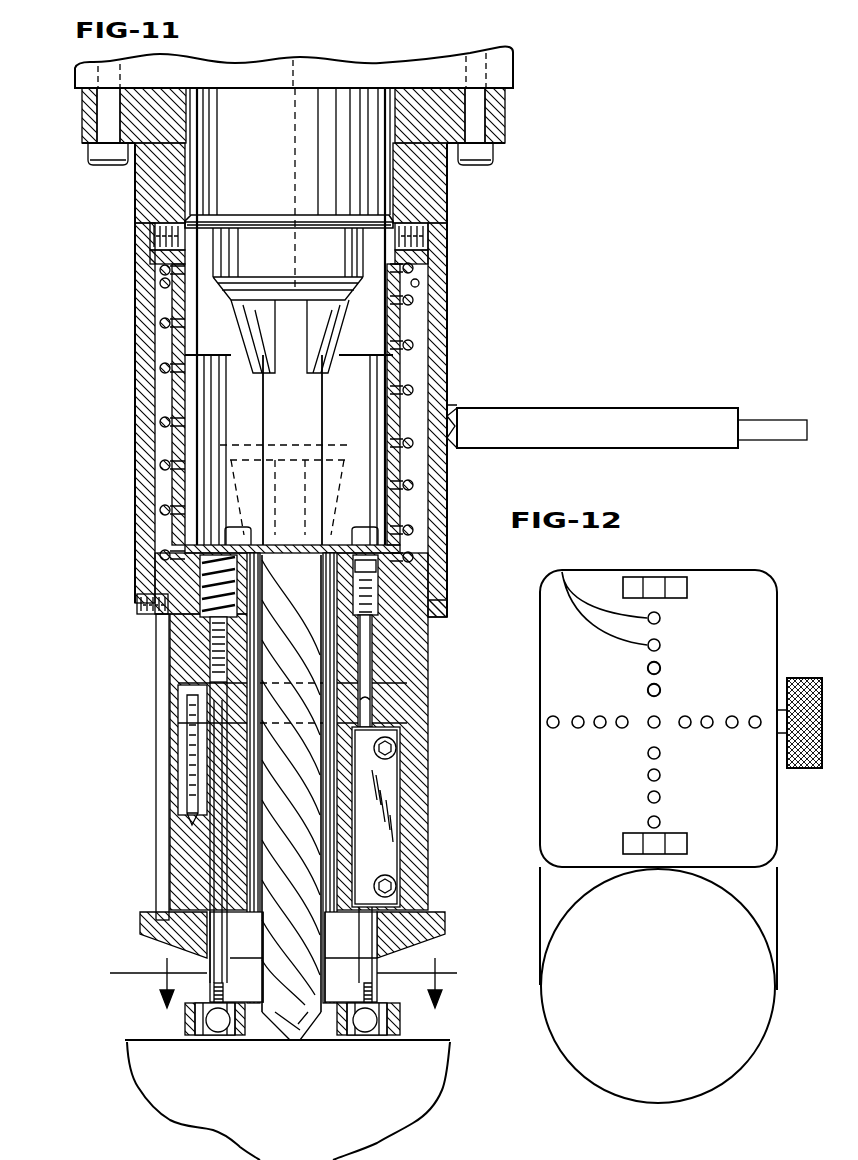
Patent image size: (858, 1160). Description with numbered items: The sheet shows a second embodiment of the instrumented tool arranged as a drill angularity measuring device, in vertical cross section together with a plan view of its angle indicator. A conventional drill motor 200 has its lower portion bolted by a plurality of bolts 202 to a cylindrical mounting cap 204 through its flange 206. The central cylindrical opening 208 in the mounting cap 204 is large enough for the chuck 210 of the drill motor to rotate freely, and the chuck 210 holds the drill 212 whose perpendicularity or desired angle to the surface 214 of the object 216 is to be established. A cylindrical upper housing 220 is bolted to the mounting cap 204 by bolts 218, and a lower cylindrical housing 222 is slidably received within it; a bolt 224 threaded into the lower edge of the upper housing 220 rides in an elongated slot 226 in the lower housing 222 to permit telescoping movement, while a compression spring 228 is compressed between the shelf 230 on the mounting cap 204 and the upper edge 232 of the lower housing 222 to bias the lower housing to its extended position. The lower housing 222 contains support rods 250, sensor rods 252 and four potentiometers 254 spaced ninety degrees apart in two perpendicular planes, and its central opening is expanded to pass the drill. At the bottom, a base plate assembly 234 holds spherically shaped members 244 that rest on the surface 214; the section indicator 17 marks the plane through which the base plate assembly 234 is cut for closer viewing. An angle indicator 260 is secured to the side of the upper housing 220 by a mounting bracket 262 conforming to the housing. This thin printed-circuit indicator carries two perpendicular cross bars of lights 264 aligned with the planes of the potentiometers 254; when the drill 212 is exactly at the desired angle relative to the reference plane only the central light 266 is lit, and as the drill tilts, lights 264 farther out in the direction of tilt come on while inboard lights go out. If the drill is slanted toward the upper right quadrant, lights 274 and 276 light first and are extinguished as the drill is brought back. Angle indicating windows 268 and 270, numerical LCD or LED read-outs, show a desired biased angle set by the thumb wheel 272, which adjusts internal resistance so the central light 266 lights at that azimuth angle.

In FIG. 11, the drill motor 200 is at (497, 66).
In FIG. 11, the bolts 202 is at (107, 166).
In FIG. 11, the cylindrical mounting cap 204 is at (430, 212).
In FIG. 11, the flange 206 is at (497, 112).
In FIG. 11, the central cylindrical opening 208 is at (396, 316).
In FIG. 11, the chuck 210 is at (228, 270).
In FIG. 11, the drill 212 is at (263, 427).
In FIG. 11, the surface 214 is at (148, 1040).
In FIG. 11, the object 216 is at (398, 1107).
In FIG. 11, the bolts 218 is at (140, 236).
In FIG. 11, the cylindrical upper housing 220 is at (437, 471).
In FIG. 11, the lower cylindrical housing 222 is at (414, 650).
In FIG. 11, the bolt 224 is at (137, 605).
In FIG. 11, the elongated slot 226 is at (160, 670).
In FIG. 11, the compression spring 228 is at (168, 473).
In FIG. 11, the shelf 230 is at (422, 287).
In FIG. 11, the upper edge 232 is at (412, 557).
In FIG. 11, the base plate assembly 234 is at (400, 1013).
In FIG. 11, the spherically shaped members 244 is at (222, 1024).
In FIG. 11, the support rods 250 is at (215, 860).
In FIG. 11, the sensor rods 252 is at (368, 710).
In FIG. 11, the potentiometers 254 is at (388, 823).
In FIG. 11, the angle indicator 260 is at (636, 404).
In FIG. 12, the angle indicator 260 is at (764, 568).
In FIG. 12, the mounting bracket 262 is at (553, 890).
In FIG. 12, the lights 264 is at (758, 715).
In FIG. 12, the central light 266 is at (660, 727).
In FIG. 12, the angle indicating window 268 is at (657, 590).
In FIG. 12, the angle indicating window 270 is at (634, 845).
In FIG. 12, the thumb wheel 272 is at (803, 768).
In FIG. 12, the light 274 is at (692, 681).
In FIG. 12, the light 276 is at (660, 666).
In FIG. 11, the section line 17 is at (289, 983).